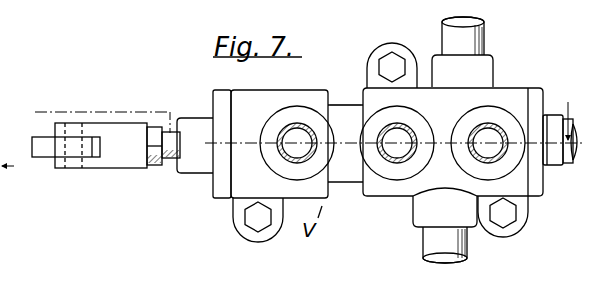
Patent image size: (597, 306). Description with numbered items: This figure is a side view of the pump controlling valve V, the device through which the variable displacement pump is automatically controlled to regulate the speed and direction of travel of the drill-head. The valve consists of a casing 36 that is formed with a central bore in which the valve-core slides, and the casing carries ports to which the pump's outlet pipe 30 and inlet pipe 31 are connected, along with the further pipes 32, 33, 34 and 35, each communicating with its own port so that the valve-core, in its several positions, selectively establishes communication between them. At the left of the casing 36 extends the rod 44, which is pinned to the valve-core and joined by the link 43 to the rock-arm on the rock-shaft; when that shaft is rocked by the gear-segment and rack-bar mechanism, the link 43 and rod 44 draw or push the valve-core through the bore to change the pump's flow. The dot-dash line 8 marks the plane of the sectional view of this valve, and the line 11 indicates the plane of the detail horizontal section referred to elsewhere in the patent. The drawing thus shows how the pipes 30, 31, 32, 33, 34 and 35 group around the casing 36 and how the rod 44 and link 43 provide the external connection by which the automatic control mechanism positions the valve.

The section line 8- 8 is at (33, 103).
The section line 11- 11 is at (13, 170).
The outlet pipe 30 is at (405, 158).
The inlet pipe 31 is at (575, 158).
The pipe 32 is at (472, 155).
The pipe 33 is at (486, 38).
The pipe 34 is at (468, 252).
The pipe 35 is at (309, 128).
The casing 36 is at (350, 183).
The link 43 is at (45, 157).
The rod 44 is at (173, 160).